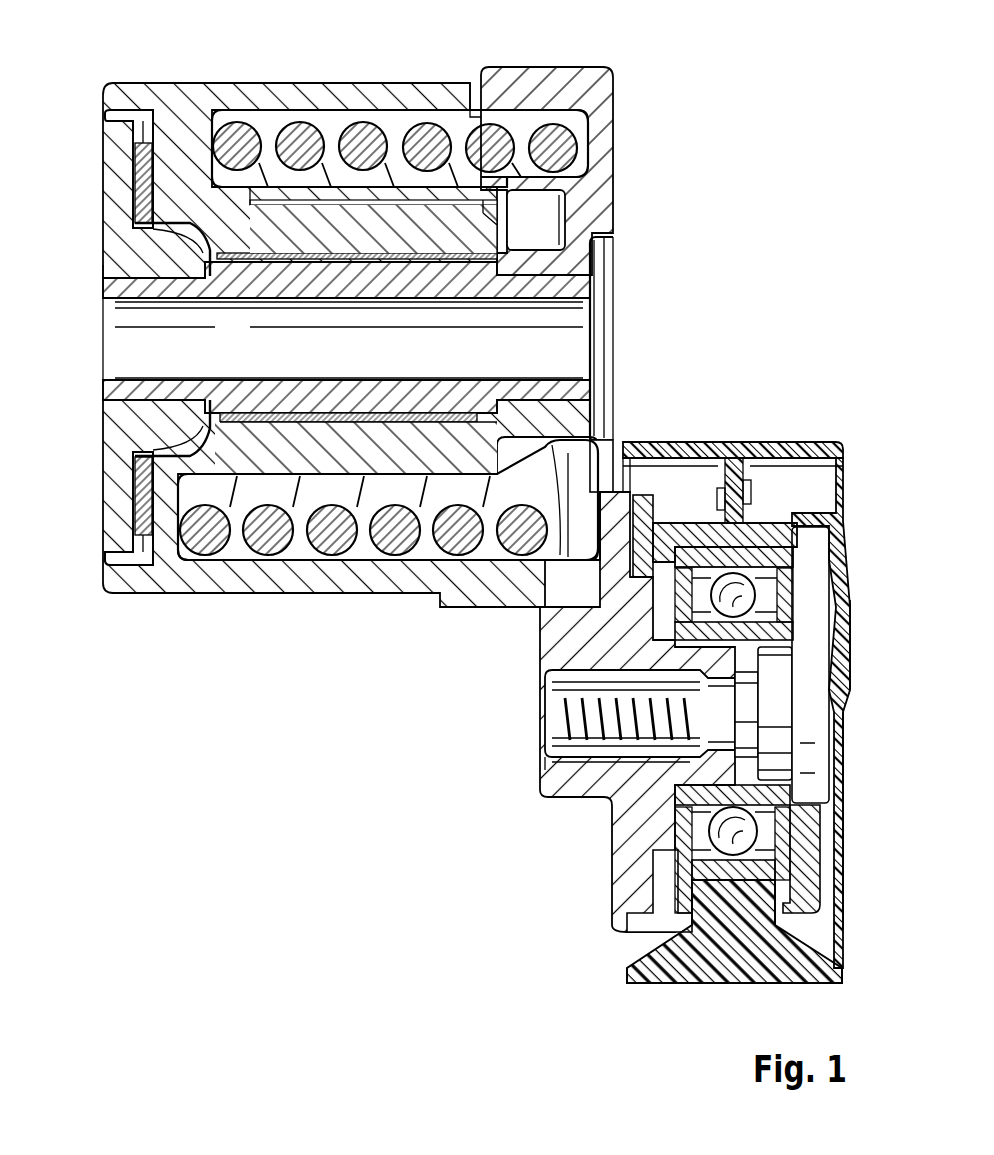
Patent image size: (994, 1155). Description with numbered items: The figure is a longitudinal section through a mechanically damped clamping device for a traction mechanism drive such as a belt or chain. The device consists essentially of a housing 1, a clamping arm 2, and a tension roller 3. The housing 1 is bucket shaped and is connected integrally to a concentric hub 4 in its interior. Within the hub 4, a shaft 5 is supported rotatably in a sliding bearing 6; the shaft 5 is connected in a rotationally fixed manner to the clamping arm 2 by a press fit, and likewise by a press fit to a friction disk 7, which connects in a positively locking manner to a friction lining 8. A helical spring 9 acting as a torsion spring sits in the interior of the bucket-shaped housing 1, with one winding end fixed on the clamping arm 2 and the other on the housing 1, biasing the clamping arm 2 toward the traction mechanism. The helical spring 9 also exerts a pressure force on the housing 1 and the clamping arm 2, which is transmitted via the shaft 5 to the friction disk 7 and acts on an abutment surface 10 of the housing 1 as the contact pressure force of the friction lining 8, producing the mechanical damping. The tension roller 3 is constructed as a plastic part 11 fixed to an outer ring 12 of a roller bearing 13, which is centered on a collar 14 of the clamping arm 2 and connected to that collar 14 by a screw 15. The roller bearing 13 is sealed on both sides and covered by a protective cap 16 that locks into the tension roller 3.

The housing 1 is at (190, 95).
The clamping arm 2 is at (563, 630).
The tension roller 3 is at (751, 415).
The hub 4 is at (363, 235).
The shaft 5 is at (425, 280).
The sliding bearing 6 is at (302, 255).
The friction disk 7 is at (122, 167).
The friction lining 8 is at (140, 203).
The helical spring 9 is at (332, 545).
The abutment surface 10 is at (136, 546).
The plastic part 11 is at (652, 978).
The outer ring 12 is at (665, 862).
The roller bearing 13 is at (660, 829).
The collar 14 is at (640, 777).
The screw 15 is at (565, 718).
The protective cap 16 is at (852, 641).